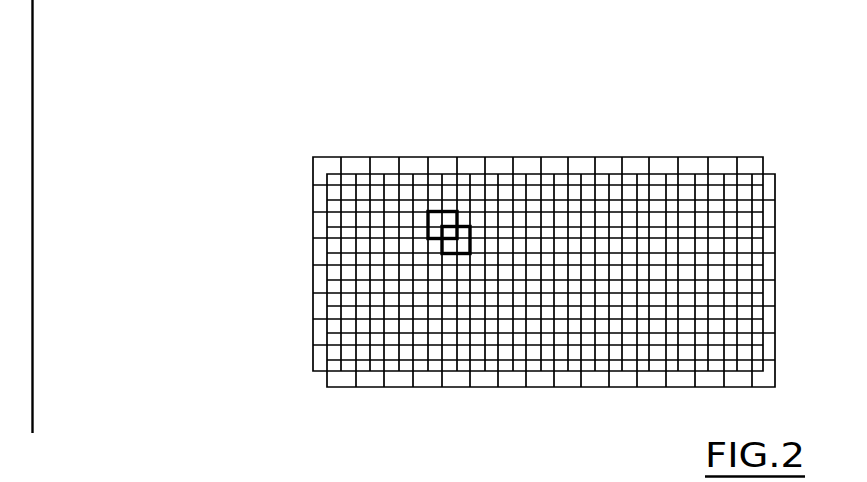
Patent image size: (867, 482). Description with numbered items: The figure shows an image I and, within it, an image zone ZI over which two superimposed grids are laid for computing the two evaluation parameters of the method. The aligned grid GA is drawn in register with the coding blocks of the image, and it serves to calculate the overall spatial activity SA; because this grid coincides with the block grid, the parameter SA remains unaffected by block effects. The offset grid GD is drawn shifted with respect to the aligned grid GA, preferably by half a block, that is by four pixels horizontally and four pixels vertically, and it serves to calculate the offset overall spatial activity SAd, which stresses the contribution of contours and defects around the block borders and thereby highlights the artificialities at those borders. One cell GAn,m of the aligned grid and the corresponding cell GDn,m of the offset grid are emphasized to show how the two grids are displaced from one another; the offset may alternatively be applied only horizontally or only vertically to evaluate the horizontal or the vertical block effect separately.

The image I is at (33, 163).
The image zone ZI is at (505, 278).
The aligned grid GA is at (499, 234).
The offset grid GD is at (551, 278).
The cell of the first grid GAn,m is at (435, 218).
The cell of the second grid GDn,m is at (467, 247).